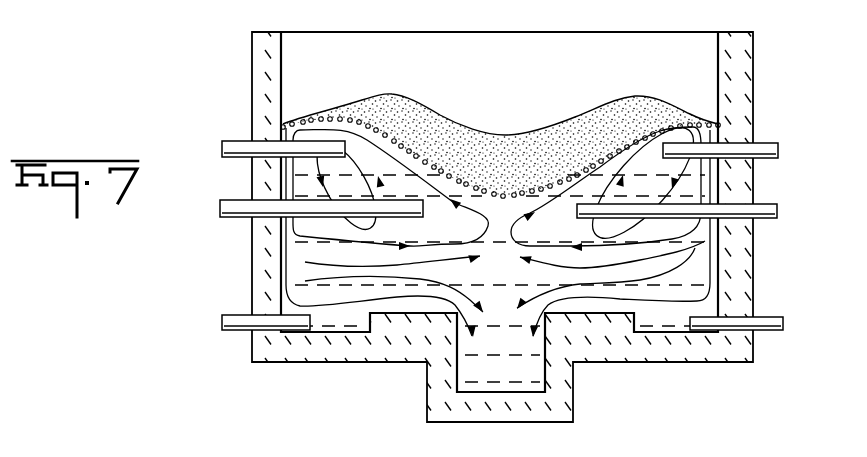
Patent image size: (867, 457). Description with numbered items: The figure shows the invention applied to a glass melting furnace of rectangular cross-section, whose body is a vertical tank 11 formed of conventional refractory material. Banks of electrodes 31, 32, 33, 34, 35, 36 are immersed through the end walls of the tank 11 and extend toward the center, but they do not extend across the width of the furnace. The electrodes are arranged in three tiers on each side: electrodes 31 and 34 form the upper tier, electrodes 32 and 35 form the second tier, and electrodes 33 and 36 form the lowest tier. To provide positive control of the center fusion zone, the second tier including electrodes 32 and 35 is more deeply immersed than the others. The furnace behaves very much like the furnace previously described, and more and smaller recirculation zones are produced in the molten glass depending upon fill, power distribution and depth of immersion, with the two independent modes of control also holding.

The vertical tank 11 is at (757, 68).
The electrode 31 is at (233, 147).
The electrode 32 is at (233, 206).
The electrode 33 is at (230, 322).
The electrode 34 is at (763, 152).
The electrode 35 is at (760, 208).
The electrode 36 is at (760, 320).